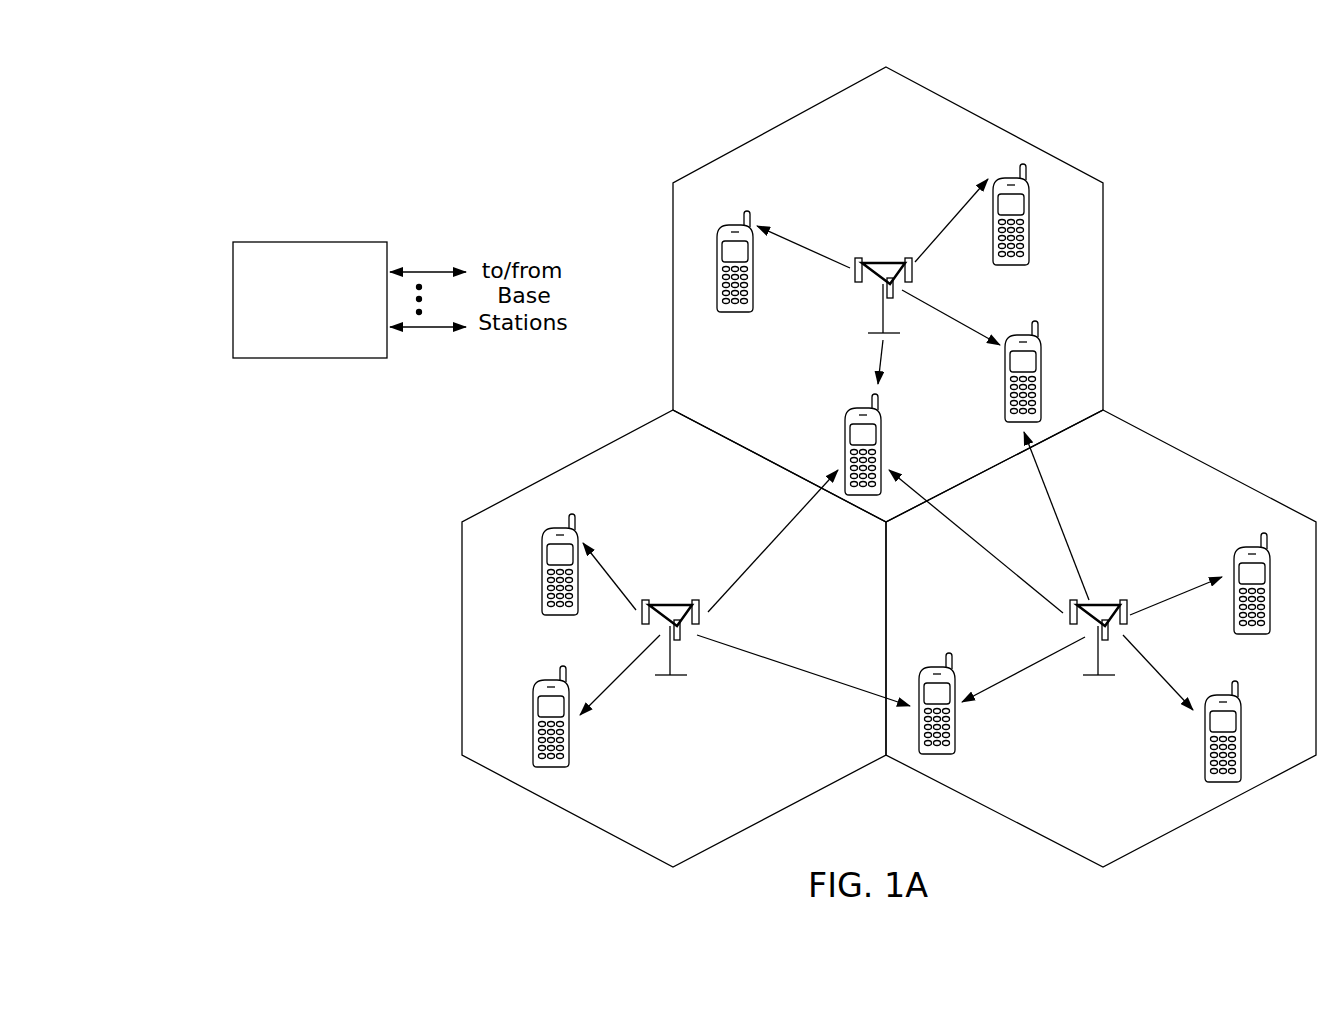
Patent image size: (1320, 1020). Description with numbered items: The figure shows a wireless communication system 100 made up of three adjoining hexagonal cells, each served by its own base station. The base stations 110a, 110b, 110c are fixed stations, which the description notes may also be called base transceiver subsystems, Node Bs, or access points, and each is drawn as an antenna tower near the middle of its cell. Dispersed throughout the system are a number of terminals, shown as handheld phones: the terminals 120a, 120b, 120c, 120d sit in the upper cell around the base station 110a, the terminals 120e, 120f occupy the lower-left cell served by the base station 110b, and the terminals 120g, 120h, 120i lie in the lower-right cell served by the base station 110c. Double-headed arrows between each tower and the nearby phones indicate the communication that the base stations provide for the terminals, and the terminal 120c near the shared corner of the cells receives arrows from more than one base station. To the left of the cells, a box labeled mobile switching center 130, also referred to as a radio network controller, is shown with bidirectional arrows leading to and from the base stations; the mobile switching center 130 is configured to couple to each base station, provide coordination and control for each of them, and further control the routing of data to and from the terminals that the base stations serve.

The wireless communication system 100 is at (889, 455).
The base station 110a is at (882, 259).
The base station 110b is at (671, 606).
The base station 110c is at (1100, 606).
The terminal 120a is at (1012, 265).
The terminal 120b is at (731, 312).
The terminal 120c is at (846, 427).
The terminal 120d is at (1005, 398).
The terminal 120e is at (562, 616).
The terminal 120f is at (560, 769).
The terminal 120g is at (956, 738).
The terminal 120h is at (1205, 760).
The terminal 120i is at (1238, 557).
The mobile switching center 130 is at (310, 242).